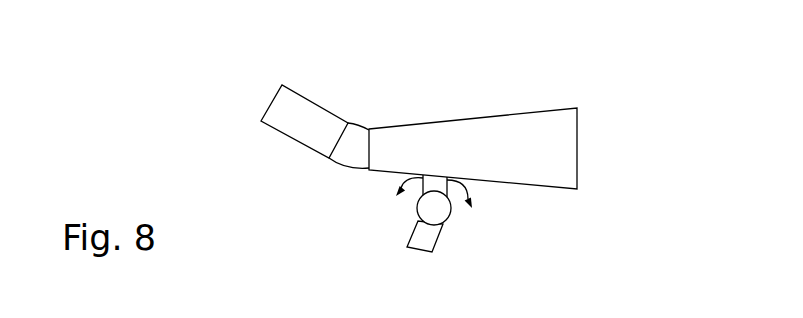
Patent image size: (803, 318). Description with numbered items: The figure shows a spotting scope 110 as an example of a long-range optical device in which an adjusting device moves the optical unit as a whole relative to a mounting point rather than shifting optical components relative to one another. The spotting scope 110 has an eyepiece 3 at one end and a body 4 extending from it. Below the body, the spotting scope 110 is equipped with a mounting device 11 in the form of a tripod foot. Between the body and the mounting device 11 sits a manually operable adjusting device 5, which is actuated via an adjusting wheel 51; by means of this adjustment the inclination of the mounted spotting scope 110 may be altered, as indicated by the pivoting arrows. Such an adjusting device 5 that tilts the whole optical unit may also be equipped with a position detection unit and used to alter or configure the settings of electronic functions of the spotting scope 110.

The spotting scope 110 is at (198, 118).
The eyepiece 3 is at (298, 93).
The body 4 is at (555, 108).
The mounting device 11 is at (416, 228).
The manually operable adjusting device 5 is at (446, 218).
The adjusting wheel 51 is at (434, 208).